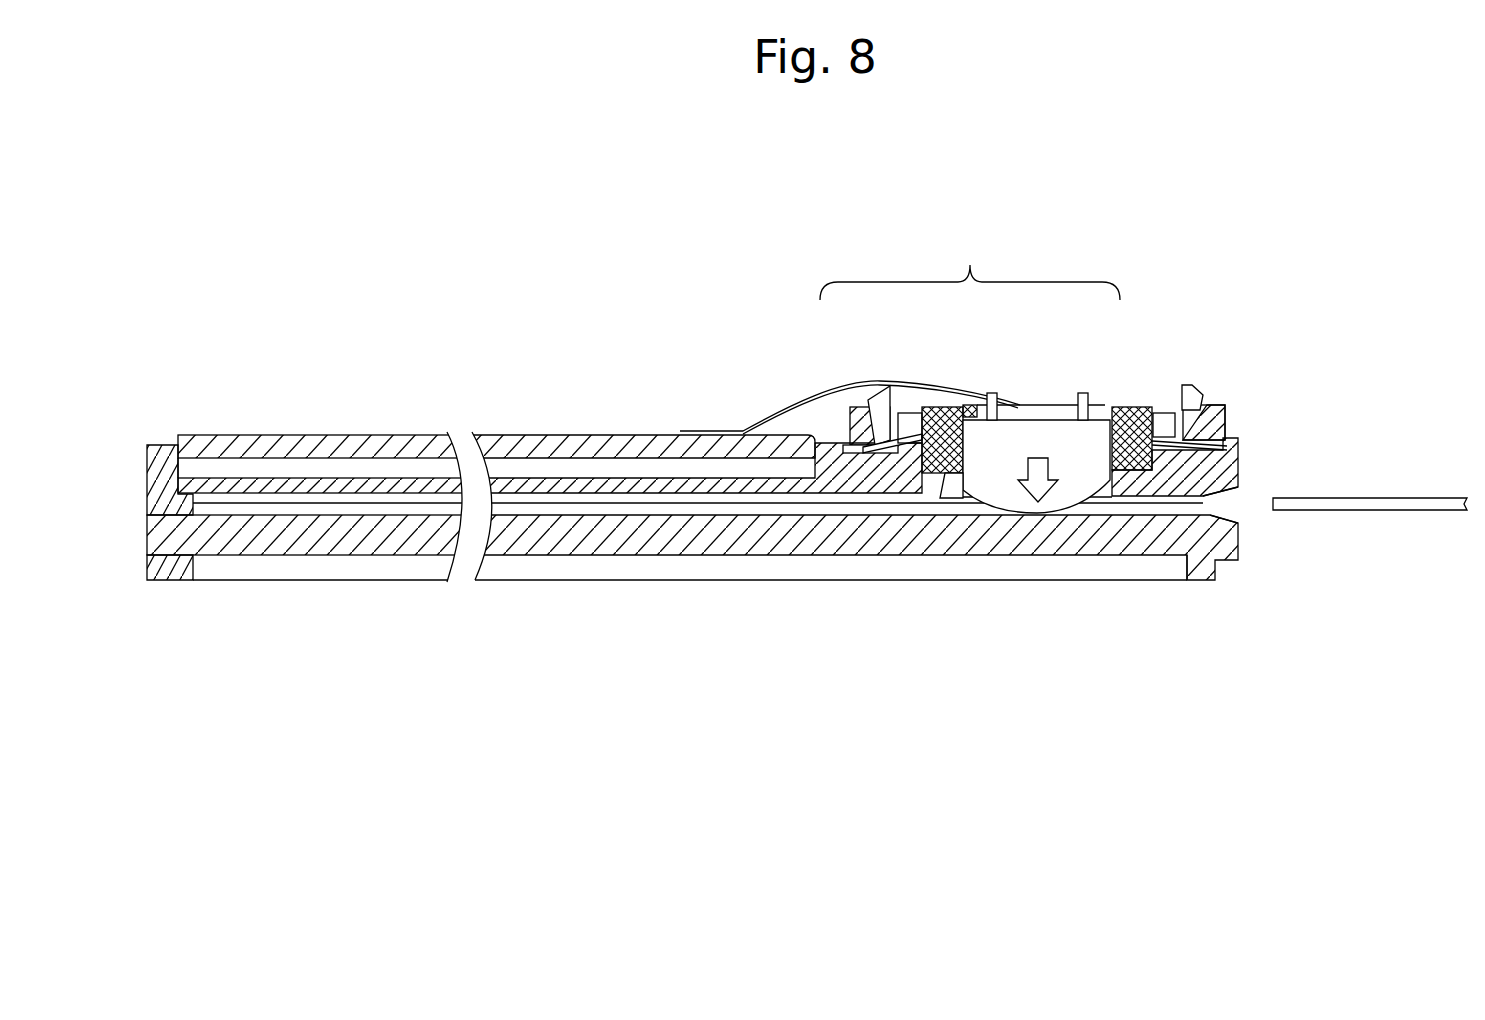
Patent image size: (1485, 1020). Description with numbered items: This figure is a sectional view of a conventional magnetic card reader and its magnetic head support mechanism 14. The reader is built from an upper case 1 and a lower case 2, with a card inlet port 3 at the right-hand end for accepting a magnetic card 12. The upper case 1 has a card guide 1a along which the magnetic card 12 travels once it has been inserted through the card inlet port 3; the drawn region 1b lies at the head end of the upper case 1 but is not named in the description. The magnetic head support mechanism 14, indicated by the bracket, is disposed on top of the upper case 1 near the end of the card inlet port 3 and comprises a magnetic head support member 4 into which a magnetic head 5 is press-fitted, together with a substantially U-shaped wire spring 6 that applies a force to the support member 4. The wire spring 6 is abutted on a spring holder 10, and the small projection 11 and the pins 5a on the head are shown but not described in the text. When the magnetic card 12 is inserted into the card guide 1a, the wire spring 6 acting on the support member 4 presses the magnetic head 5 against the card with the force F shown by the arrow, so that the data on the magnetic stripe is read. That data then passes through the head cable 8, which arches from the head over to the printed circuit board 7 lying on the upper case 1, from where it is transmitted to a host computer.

The upper case 1 is at (1160, 420).
The card guide 1a is at (840, 510).
The contact piece 1b is at (1130, 487).
The lower case 2 is at (968, 540).
The card inlet port 3 is at (1225, 503).
The magnetic head support member 4 is at (1123, 407).
The magnetic head 5 is at (1075, 458).
The pins 5a is at (988, 393).
The wire spring 6 is at (863, 405).
The printed circuit board 7 is at (513, 434).
The head cable 8 is at (757, 420).
The spring holder 10 is at (1213, 410).
The projection 11 is at (1189, 385).
The magnetic card 12 is at (1360, 498).
The magnetic head support mechanism 14 is at (970, 260).